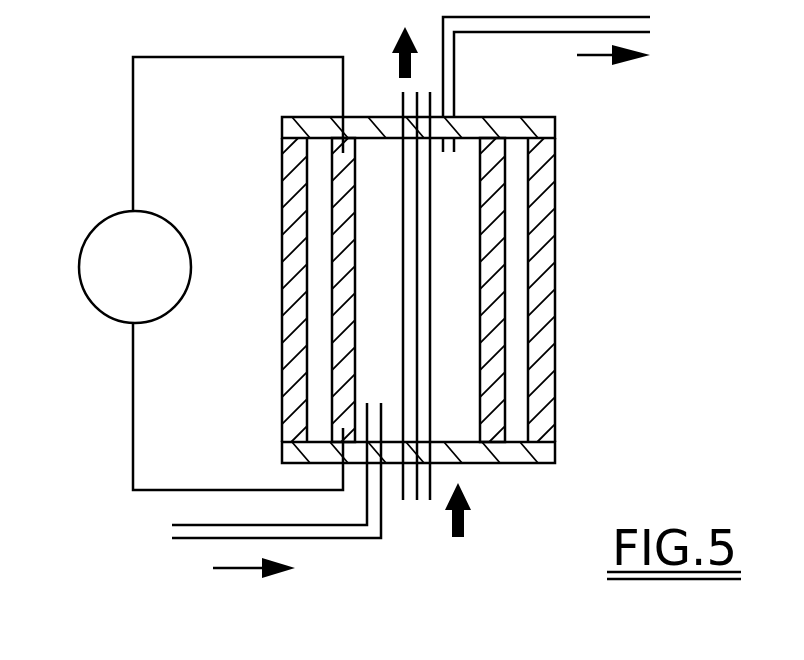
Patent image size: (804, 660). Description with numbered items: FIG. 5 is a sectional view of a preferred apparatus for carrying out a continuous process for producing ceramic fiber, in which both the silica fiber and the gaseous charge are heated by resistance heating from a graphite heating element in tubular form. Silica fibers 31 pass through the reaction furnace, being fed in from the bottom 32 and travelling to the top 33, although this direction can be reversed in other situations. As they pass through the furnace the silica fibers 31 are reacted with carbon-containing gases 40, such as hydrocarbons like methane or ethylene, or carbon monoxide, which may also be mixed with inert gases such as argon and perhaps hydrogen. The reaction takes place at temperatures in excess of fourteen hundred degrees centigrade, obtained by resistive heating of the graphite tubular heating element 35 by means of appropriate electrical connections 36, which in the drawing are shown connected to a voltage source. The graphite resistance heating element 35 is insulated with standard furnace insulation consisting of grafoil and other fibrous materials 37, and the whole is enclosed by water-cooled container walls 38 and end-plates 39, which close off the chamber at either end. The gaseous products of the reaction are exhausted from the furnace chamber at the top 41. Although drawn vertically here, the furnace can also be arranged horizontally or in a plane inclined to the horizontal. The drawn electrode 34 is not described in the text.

The silica fibers 31 is at (430, 215).
The bottom 32 is at (464, 518).
The top 33 is at (401, 64).
The electrode 34 is at (462, 258).
The graphite tubular heating element 35 is at (343, 213).
The electrical connections 36 is at (88, 234).
The furnace insulation 37 is at (518, 303).
The water-cooled container walls 38 is at (546, 360).
The end-plates 39 is at (503, 455).
The carbon-containing gases 40 is at (243, 568).
The exhaust at the top 41 is at (598, 55).